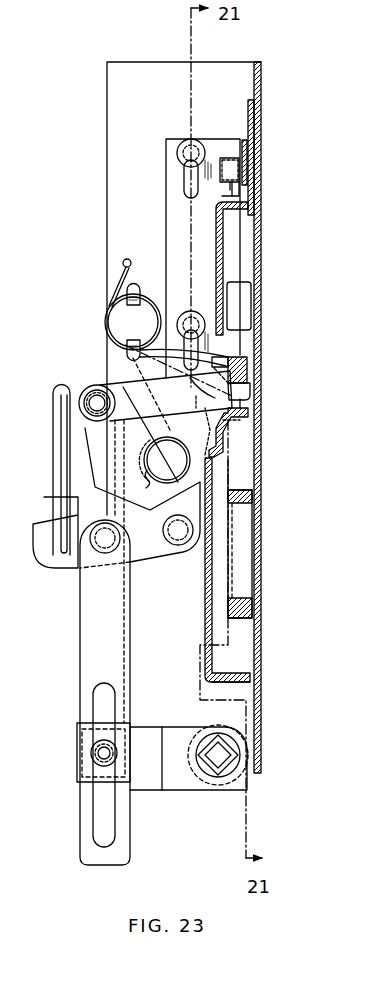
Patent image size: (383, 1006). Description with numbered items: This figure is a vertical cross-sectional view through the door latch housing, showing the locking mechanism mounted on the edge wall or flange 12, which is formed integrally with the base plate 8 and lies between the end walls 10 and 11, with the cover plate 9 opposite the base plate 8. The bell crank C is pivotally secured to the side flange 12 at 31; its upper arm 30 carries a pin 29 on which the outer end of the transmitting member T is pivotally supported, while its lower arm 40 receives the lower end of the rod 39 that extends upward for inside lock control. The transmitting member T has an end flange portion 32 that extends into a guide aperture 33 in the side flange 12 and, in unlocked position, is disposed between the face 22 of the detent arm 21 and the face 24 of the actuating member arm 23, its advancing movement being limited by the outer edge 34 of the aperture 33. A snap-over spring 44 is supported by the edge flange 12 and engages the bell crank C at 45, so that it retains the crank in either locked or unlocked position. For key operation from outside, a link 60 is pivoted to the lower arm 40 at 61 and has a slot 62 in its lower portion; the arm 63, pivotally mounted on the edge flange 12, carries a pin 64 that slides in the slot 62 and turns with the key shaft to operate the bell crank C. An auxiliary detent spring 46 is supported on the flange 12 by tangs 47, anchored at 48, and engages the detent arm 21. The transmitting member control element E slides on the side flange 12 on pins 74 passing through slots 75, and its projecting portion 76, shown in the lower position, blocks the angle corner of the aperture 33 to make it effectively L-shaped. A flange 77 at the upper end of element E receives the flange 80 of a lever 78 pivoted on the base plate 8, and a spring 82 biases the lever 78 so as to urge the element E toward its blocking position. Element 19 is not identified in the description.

The base plate 8 is at (259, 246).
The cover plate 9 is at (205, 598).
The end wall 10 is at (230, 190).
The end wall 11 is at (241, 685).
The edge wall or flange 12 is at (146, 70).
The guide block 19 is at (240, 535).
The detent arm 21 is at (249, 366).
The face of detent arm 22 is at (248, 378).
The actuating member arm 23 is at (238, 450).
The face of actuating member arm 24 is at (240, 432).
The pin 29 is at (97, 395).
The upper arm of bell crank 30 is at (87, 432).
The pivot of bell crank 31 is at (178, 548).
The end flange portion 32 is at (200, 403).
The guide aperture 33 is at (215, 410).
The outer edge of guide aperture 34 is at (248, 415).
The rod 39 is at (56, 470).
The arm of bell crank 40 is at (66, 568).
The snap-over spring 44 is at (106, 322).
The spring engagement point on bell crank 45 is at (146, 480).
The auxiliary detent spring 46 is at (251, 357).
The tangs 47 is at (134, 293).
The anchor point of auxiliary detent spring 48 is at (127, 259).
The link 60 is at (90, 619).
The pivot of link 61 is at (104, 555).
The slot 62 is at (100, 806).
The arm 63 is at (186, 782).
The pin 64 is at (90, 754).
The pins 74 is at (177, 156).
The slots 75 is at (183, 182).
The projecting portion 76 is at (254, 397).
The flange 77 is at (233, 158).
The lever 78 is at (249, 162).
The flange of lever 80 is at (232, 196).
The spring 82 is at (226, 158).
The transmitting member control element E is at (178, 206).
The transmitting member T is at (141, 397).
The bell crank C is at (100, 475).